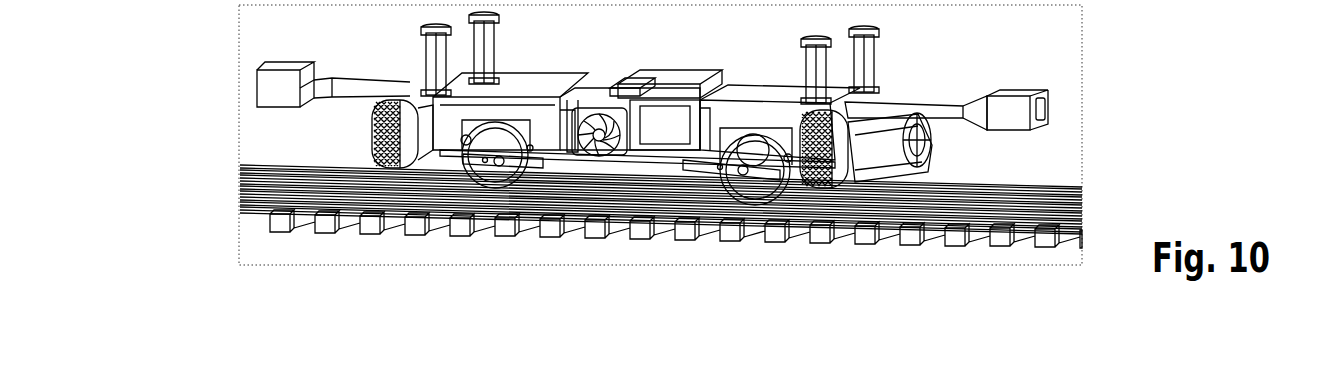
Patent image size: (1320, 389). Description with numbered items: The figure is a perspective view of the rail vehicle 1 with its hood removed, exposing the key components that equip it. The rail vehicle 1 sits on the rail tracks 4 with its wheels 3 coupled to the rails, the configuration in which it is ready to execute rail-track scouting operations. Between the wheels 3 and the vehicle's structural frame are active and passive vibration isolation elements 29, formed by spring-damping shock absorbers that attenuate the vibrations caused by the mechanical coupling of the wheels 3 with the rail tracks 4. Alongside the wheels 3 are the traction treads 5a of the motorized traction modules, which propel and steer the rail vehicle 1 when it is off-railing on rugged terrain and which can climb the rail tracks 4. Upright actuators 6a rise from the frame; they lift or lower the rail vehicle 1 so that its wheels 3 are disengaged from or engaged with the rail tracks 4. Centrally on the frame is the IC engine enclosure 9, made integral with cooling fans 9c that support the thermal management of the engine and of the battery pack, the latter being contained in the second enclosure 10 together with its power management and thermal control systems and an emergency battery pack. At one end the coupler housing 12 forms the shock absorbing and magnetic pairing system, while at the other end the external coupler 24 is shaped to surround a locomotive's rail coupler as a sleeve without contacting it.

The rail vehicle 1 is at (214, 72).
The wheels 3 is at (752, 188).
The rail tracks 4 is at (238, 190).
The traction treads 5a is at (887, 166).
The actuators 6a is at (830, 88).
The IC engine enclosure 9 is at (650, 90).
The cooling fans 9c is at (628, 83).
The second enclosure 10 is at (680, 115).
The coupler housing 12 is at (363, 83).
The external coupler 24 is at (1020, 92).
The vibration isolation elements 29 is at (512, 133).